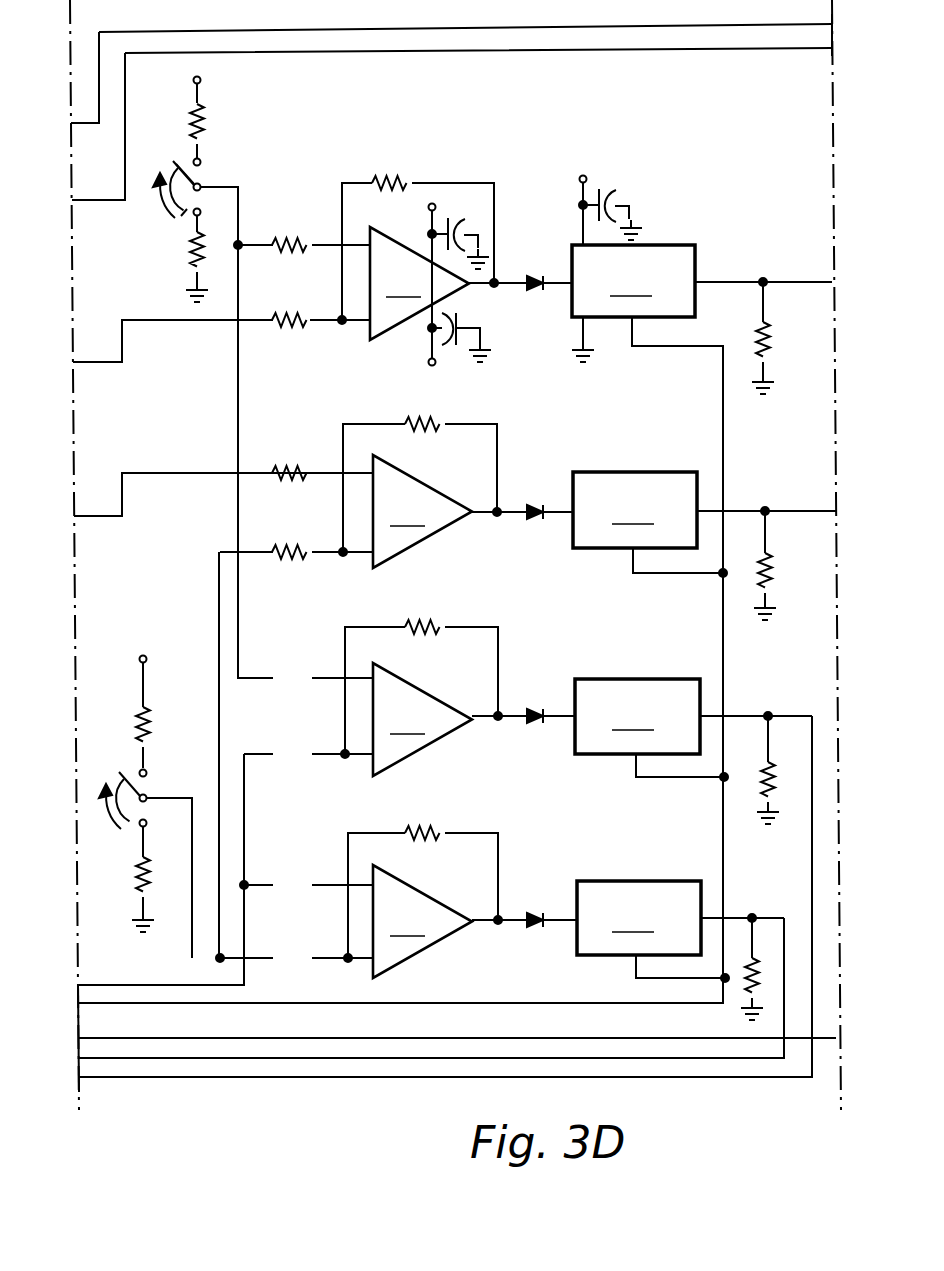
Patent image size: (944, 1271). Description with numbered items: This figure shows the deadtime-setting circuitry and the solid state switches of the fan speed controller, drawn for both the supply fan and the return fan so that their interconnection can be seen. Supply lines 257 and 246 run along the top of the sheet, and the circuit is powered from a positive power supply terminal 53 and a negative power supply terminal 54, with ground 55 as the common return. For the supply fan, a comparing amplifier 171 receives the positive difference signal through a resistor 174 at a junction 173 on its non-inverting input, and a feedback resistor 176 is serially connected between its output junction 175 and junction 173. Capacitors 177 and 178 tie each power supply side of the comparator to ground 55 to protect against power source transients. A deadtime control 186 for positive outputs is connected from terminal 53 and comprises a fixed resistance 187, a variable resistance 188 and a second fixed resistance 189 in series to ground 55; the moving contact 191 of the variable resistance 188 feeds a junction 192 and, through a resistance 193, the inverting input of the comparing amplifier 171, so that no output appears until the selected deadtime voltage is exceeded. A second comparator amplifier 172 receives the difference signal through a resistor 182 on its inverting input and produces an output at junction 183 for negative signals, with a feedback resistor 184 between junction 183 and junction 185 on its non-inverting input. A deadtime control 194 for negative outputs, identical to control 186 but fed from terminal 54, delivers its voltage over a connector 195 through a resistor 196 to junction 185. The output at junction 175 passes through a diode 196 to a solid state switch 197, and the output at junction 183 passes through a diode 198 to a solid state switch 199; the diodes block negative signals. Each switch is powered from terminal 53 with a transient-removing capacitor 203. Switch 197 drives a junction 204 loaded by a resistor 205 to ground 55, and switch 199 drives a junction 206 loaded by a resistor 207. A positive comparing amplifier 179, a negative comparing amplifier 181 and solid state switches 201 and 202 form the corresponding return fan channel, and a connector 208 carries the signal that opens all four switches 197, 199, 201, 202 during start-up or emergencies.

The supply conductor 257 is at (350, 31).
The conductor 246 is at (343, 55).
The positive power supply terminal 53 is at (200, 79).
The negative power supply terminal 54 is at (429, 364).
The ground 55 is at (196, 300).
The fixed resistance 187 is at (192, 112).
The deadtime control 186 is at (227, 160).
The moving contact 191 is at (205, 172).
The variable resistance 188 is at (185, 222).
The second fixed resistance 189 is at (192, 258).
The junction 192 is at (240, 245).
The resistance 193 is at (296, 256).
The resistor 174 is at (298, 312).
The junction 173 is at (344, 324).
The resistor 176 is at (383, 178).
The comparing amplifier 171 is at (419, 283).
The capacitor 177 is at (478, 212).
The capacitor 178 is at (482, 313).
The output junction 175 is at (495, 287).
The diode 196 is at (533, 276).
The solid state switch 197 is at (633, 281).
The capacitor 203 is at (620, 196).
The junction 204 is at (780, 262).
The resistor 205 is at (760, 340).
The connector 208 is at (722, 400).
The resistor 184 is at (430, 420).
The resistor 182 is at (302, 465).
The comparator amplifier 172 is at (422, 511).
The junction 185 is at (343, 556).
The output junction 183 is at (496, 516).
The diode 198 is at (533, 503).
The solid state switch 199 is at (648, 522).
The junction 206 is at (790, 490).
The resistor 207 is at (769, 576).
The connector 195 is at (219, 580).
The deadtime control 194 is at (165, 786).
The positive comparing amplifier 179 is at (458, 698).
The negative comparing amplifier 181 is at (408, 902).
The solid state switch 201 is at (693, 742).
The solid state switch 202 is at (680, 941).